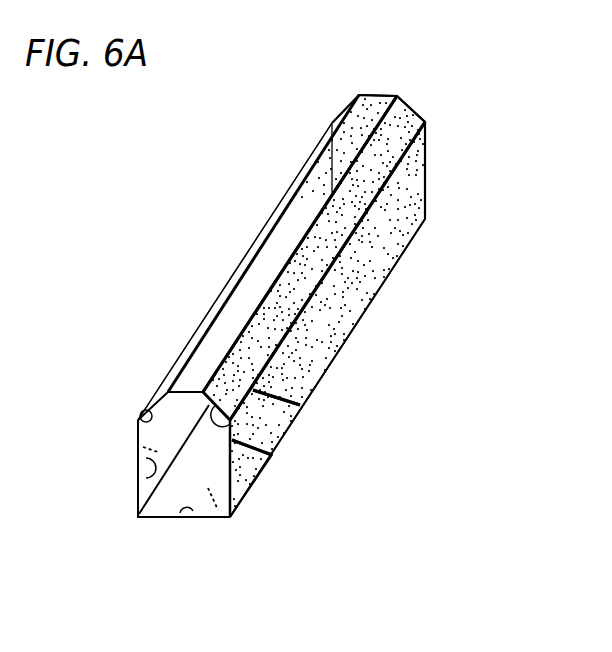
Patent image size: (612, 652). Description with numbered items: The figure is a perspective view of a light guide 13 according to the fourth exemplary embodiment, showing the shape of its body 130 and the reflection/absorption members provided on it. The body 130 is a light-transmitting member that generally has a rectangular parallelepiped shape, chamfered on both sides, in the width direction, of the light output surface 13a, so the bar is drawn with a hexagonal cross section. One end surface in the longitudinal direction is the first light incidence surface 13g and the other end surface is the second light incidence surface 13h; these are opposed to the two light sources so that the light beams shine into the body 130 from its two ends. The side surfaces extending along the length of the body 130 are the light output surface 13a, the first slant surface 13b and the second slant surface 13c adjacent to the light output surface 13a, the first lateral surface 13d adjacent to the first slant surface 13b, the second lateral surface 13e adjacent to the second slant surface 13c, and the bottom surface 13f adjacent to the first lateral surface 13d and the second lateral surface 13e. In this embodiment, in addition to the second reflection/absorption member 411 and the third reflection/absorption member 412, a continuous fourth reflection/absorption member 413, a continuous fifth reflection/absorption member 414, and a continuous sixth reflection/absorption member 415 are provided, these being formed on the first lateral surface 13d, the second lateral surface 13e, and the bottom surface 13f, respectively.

The light guide 13 is at (488, 102).
The light output surface 13a is at (370, 104).
The first slant surface 13b is at (138, 421).
The second slant surface 13c is at (272, 455).
The first lateral surface 13d is at (150, 477).
The second lateral surface 13e is at (247, 483).
The bottom surface 13f is at (180, 513).
The first light incidence surface 13g is at (395, 212).
The second light incidence surface 13h is at (172, 485).
The body 130 is at (331, 122).
The second reflection/absorption member 411 is at (192, 338).
The third reflection/absorption member 412 is at (242, 385).
The fourth reflection/absorption member 413 is at (140, 448).
The fifth reflection/absorption member 414 is at (338, 330).
The sixth reflection/absorption member 415 is at (213, 508).